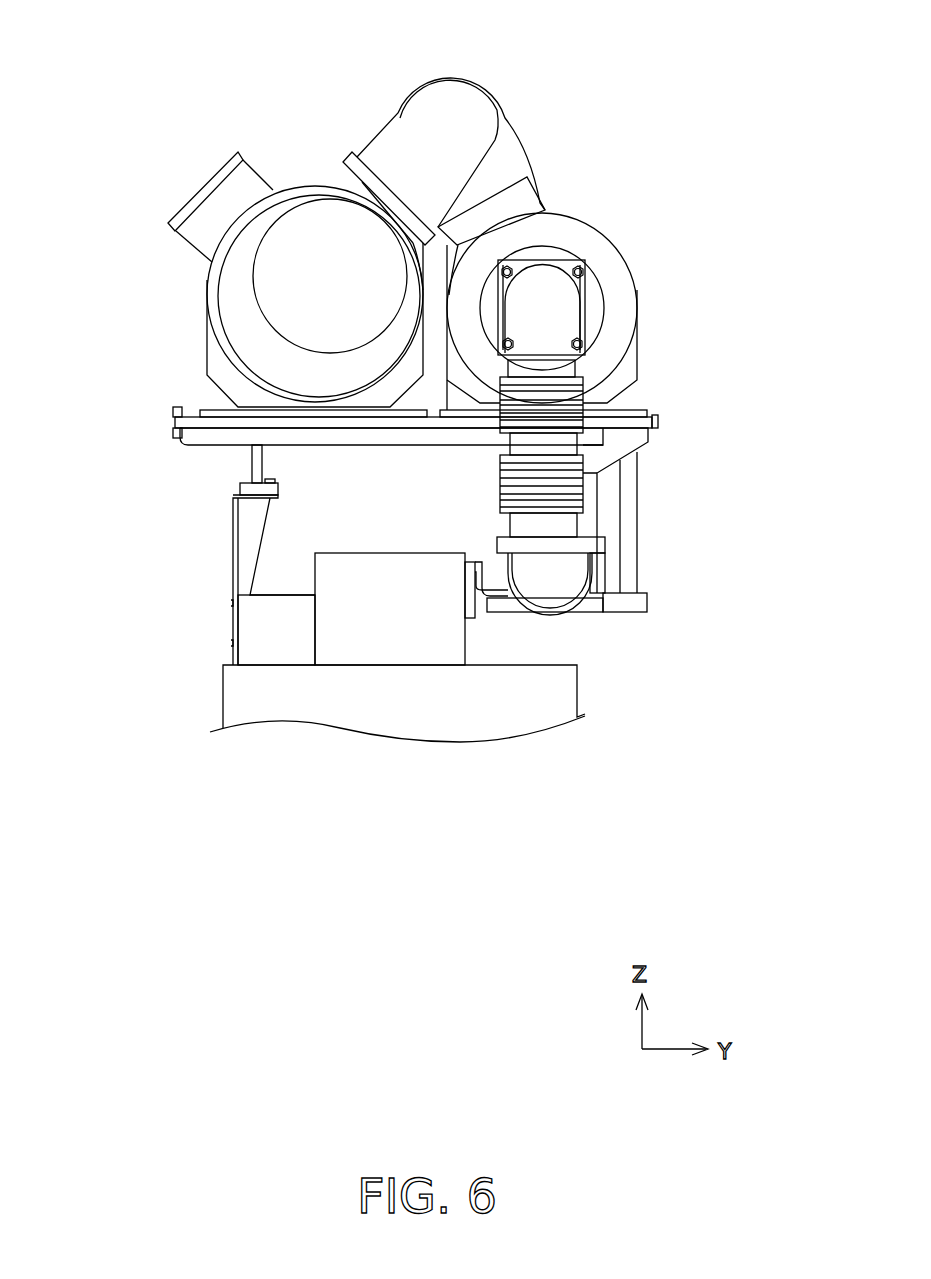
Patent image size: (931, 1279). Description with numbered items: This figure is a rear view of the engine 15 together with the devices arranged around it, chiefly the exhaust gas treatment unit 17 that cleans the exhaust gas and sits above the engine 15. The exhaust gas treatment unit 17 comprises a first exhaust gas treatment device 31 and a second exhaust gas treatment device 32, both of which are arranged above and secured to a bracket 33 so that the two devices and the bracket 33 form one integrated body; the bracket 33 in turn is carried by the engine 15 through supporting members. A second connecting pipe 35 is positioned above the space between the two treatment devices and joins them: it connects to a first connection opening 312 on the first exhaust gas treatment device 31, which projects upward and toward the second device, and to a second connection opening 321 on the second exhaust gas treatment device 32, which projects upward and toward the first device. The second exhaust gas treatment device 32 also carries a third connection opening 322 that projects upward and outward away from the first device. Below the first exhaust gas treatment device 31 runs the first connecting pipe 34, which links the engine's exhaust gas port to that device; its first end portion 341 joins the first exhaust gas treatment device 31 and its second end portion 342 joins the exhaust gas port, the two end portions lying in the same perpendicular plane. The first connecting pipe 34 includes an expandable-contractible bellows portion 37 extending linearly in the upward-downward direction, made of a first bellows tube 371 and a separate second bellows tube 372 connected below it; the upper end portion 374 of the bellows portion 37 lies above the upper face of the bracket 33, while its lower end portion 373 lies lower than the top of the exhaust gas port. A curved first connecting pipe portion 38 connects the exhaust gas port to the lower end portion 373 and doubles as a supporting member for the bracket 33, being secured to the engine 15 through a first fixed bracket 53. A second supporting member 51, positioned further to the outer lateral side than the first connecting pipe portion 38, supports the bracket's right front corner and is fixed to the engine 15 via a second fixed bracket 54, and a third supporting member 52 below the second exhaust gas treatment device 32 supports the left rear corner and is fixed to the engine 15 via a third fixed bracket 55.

The engine 15 is at (210, 695).
The exhaust gas treatment unit 17 is at (323, 130).
The first exhaust gas treatment device 31 is at (597, 243).
The first connection opening 312 is at (548, 200).
The second exhaust gas treatment device 32 is at (212, 296).
The second connection opening 321 is at (382, 185).
The third connection opening 322 is at (212, 183).
The bracket 33 is at (218, 437).
The first connecting pipe 34 is at (588, 363).
The first end portion 341 is at (590, 285).
The second end portion 342 is at (608, 560).
The second connecting pipe 35 is at (452, 100).
The bellows portion 37 is at (644, 547).
The first bellows tube 371 is at (586, 400).
The second bellows tube 372 is at (576, 477).
The lower end portion 373 is at (541, 545).
The upper end portion 374 is at (543, 345).
The first connecting pipe portion 38 is at (578, 585).
The second supporting member 51 is at (632, 493).
The third supporting member 52 is at (250, 465).
The first fixed bracket 53 is at (480, 565).
The second fixed bracket 54 is at (622, 610).
The third fixed bracket 55 is at (233, 545).